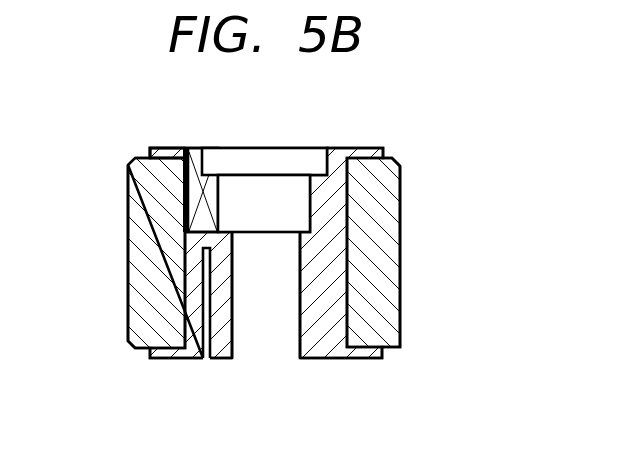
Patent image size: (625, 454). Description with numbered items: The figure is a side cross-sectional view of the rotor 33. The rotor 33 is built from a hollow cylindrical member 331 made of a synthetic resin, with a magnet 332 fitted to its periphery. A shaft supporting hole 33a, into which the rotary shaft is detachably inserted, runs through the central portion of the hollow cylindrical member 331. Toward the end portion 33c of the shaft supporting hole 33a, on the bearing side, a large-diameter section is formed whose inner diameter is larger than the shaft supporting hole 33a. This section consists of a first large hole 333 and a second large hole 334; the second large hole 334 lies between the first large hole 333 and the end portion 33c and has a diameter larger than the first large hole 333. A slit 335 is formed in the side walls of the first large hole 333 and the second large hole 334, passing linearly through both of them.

The rotor 33 is at (421, 170).
The shaft supporting hole 33a is at (257, 350).
The end portion 33c is at (172, 148).
The hollow cylindrical member 331 is at (346, 340).
The magnet 332 is at (402, 290).
The first large hole 333 is at (295, 183).
The second large hole 334 is at (225, 147).
The slit 335 is at (193, 199).